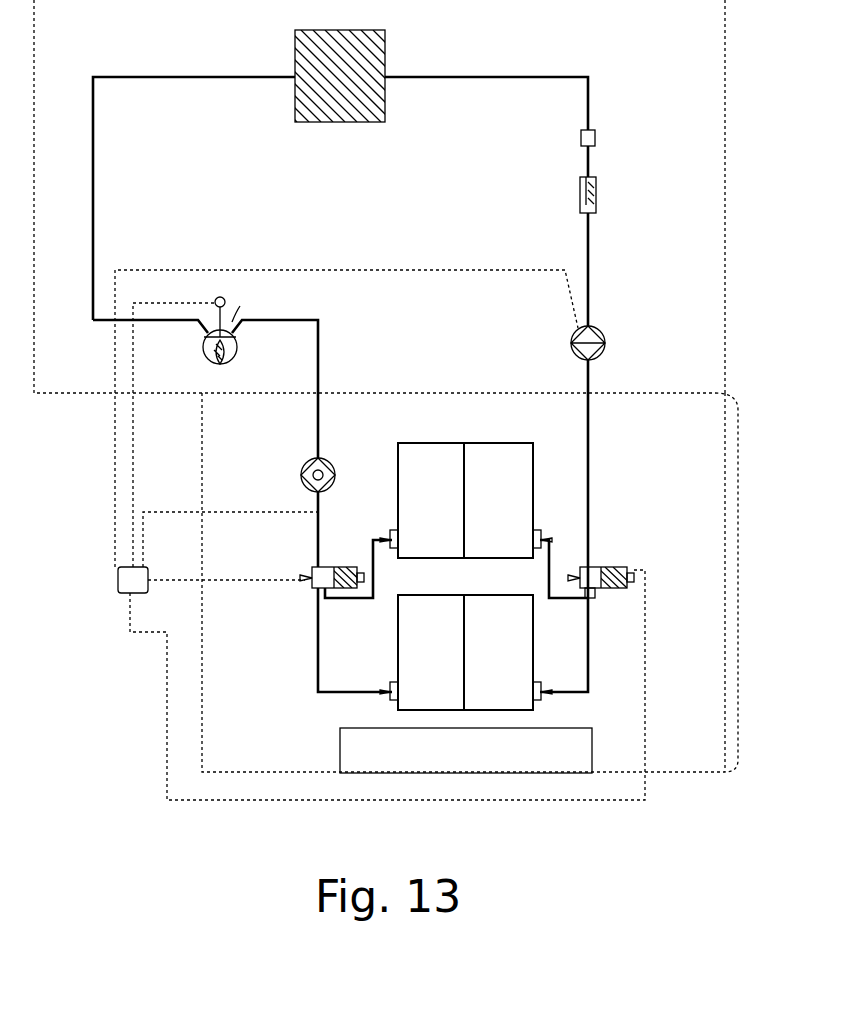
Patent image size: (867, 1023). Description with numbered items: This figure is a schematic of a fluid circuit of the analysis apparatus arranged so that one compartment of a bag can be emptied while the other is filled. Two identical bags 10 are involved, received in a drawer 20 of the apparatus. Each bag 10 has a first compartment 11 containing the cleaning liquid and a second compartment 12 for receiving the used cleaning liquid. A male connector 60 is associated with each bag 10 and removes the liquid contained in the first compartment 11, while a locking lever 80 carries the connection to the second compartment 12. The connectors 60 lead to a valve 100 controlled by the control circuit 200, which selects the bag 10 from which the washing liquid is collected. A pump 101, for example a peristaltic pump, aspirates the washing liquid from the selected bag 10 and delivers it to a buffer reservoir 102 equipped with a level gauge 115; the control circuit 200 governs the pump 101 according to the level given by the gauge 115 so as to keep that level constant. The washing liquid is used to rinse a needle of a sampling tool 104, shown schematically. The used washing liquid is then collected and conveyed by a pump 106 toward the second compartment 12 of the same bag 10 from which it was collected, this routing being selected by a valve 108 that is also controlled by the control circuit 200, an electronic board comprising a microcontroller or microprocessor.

The bag 10 is at (455, 613).
The first compartment 11 is at (458, 460).
The second compartment 12 is at (508, 460).
The drawer 20 is at (738, 605).
The male connector 60 is at (392, 532).
The locking lever 80 is at (540, 530).
The valve 100 is at (305, 575).
The pump 101 is at (301, 482).
The buffer reservoir 102 is at (205, 352).
The sampling tool 104 is at (597, 205).
The pump 106 is at (603, 335).
The valve 108 is at (603, 568).
The level gauge 115 is at (236, 360).
The control circuit 200 is at (118, 582).